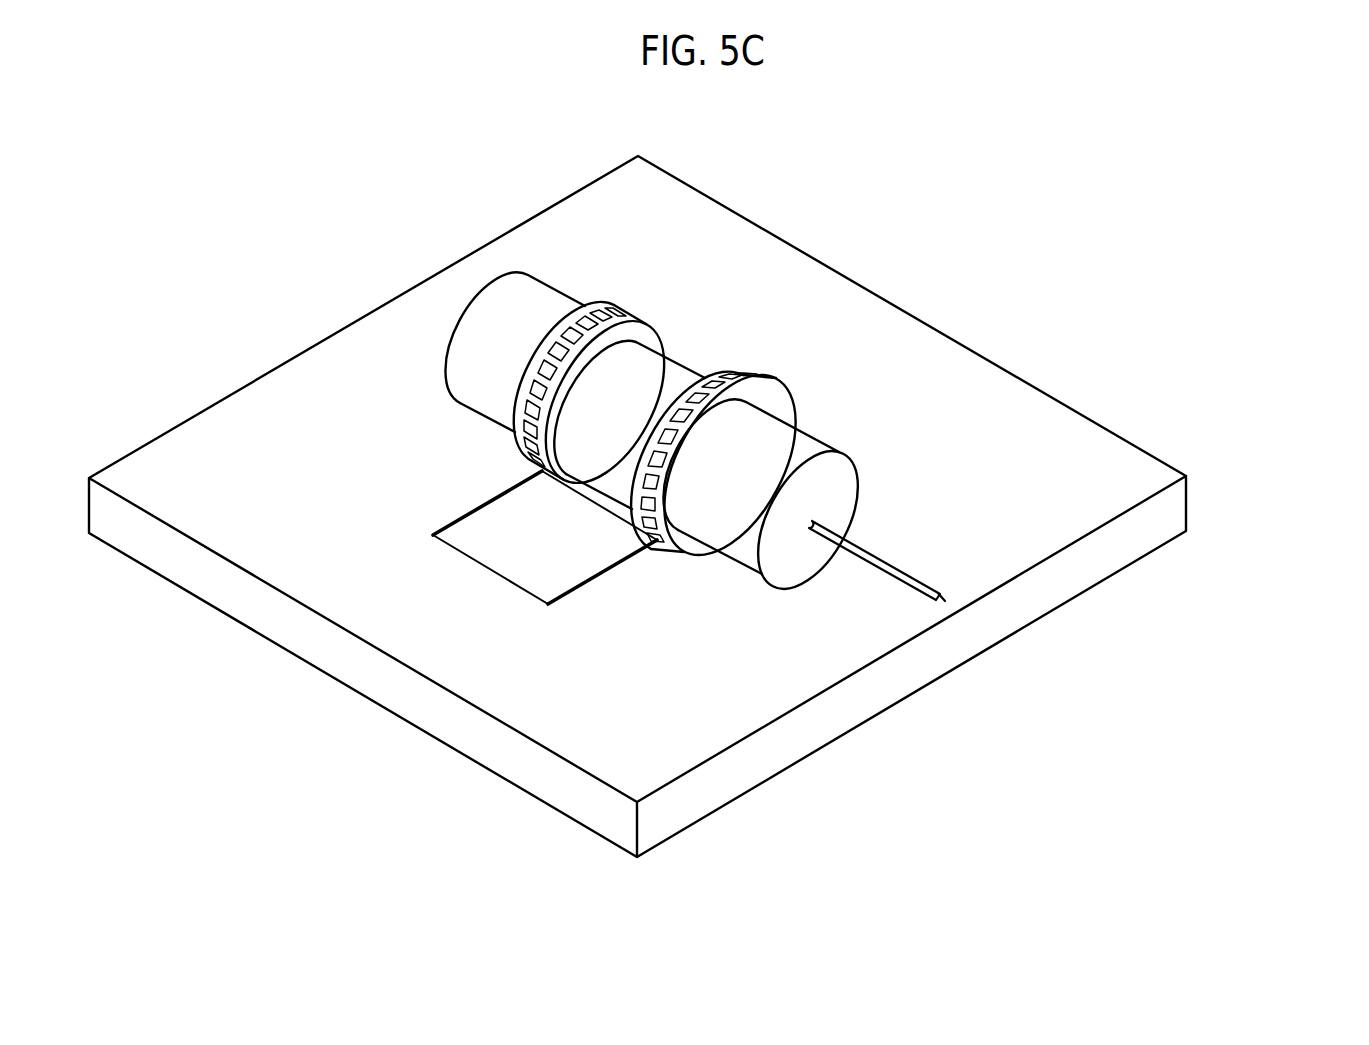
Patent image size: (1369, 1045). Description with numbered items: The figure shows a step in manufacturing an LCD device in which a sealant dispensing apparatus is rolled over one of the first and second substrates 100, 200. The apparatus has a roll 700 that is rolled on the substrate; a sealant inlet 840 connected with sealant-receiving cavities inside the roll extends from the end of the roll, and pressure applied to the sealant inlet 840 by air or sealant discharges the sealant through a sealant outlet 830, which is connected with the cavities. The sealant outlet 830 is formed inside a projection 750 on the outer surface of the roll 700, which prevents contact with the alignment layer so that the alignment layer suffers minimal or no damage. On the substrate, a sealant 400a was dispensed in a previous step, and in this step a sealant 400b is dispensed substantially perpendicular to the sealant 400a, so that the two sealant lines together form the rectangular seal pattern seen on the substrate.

The first substrate 100 is at (706, 506).
The second substrate 200 is at (1189, 503).
The sealant 400a is at (484, 571).
The sealant 400b is at (479, 494).
The roll 700 is at (456, 360).
The projection 750 is at (680, 542).
The sealant outlet 830 is at (728, 374).
The sealant inlet 840 is at (896, 570).